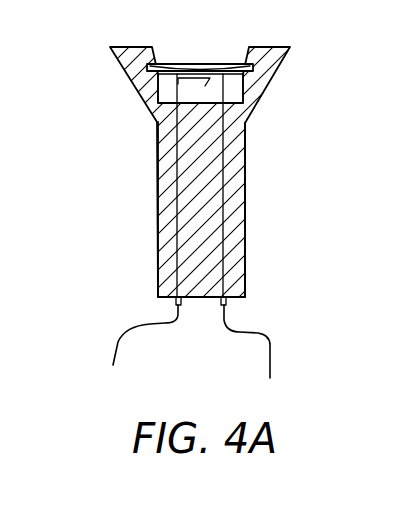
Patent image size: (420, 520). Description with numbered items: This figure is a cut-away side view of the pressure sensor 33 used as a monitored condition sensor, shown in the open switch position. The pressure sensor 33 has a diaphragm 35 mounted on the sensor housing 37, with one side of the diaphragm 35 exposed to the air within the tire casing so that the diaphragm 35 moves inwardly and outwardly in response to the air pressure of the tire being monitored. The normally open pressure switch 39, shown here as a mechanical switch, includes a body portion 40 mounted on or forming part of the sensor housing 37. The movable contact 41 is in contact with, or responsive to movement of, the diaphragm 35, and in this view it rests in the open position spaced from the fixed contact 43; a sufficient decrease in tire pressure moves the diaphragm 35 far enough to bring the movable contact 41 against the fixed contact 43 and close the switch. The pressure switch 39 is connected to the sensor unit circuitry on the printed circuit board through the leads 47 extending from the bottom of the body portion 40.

The pressure sensor 33 is at (245, 218).
The diaphragm 35 is at (172, 64).
The sensor housing 37 is at (158, 218).
The pressure switch 39 is at (236, 90).
The body portion 40 is at (245, 255).
The movable contact 41 is at (205, 85).
The fixed contact 43 is at (177, 86).
The leads 47 is at (120, 342).